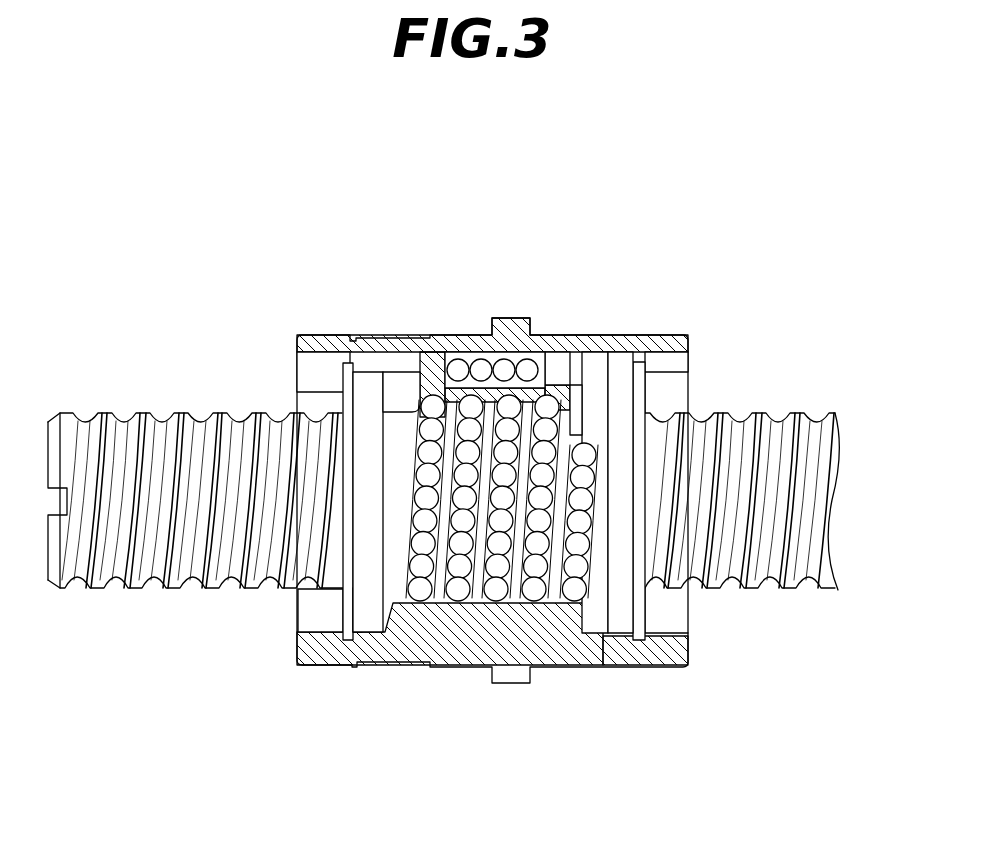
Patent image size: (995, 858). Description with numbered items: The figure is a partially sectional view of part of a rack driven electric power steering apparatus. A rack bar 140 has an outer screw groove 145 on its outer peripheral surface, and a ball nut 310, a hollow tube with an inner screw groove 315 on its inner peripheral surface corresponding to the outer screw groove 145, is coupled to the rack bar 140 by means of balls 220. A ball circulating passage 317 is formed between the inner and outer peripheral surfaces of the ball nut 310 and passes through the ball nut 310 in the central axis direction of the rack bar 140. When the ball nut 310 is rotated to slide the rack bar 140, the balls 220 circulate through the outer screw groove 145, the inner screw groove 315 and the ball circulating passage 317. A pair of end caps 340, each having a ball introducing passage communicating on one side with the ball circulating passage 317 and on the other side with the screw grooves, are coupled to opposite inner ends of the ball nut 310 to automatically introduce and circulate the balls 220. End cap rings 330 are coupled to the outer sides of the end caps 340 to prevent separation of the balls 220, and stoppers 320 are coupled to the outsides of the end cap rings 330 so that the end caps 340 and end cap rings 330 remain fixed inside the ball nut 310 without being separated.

The rack bar 140 is at (808, 378).
The outer screw groove 145 is at (745, 410).
The balls 220 is at (422, 580).
The ball nut 310 is at (638, 345).
The inner screw groove 315 is at (470, 392).
The ball circulating passage 317 is at (512, 395).
The stopper 320 is at (352, 365).
The end cap ring 330 is at (368, 392).
The end cap 340 is at (403, 358).